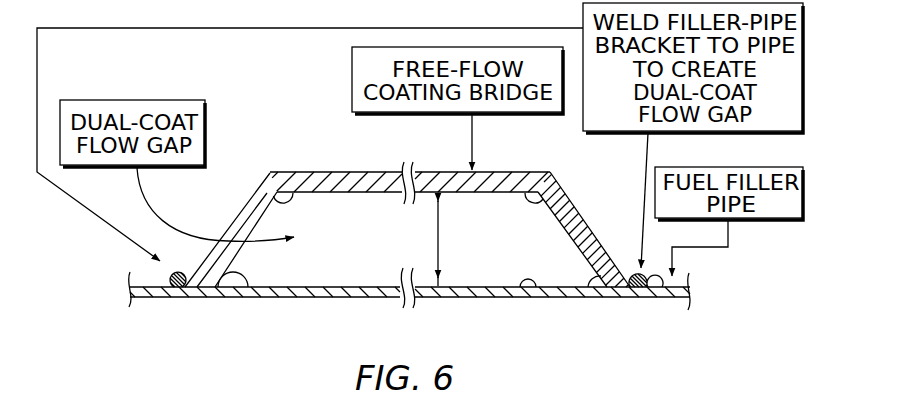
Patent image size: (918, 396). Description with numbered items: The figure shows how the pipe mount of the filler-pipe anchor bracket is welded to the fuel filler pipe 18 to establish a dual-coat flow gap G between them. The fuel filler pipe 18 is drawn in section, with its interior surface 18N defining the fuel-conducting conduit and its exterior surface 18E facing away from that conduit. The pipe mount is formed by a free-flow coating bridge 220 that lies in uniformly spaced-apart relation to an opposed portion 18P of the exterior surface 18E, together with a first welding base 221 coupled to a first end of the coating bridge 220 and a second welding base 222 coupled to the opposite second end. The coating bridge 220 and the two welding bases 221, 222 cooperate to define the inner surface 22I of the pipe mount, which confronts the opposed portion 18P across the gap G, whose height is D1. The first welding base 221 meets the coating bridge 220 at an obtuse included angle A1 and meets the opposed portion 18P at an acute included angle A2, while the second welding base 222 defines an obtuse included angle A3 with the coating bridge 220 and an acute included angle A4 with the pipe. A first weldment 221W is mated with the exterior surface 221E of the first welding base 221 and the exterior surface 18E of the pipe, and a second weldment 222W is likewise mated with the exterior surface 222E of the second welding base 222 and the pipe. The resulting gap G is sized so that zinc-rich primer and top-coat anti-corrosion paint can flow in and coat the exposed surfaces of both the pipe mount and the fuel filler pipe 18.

The fuel filler pipe 18 is at (227, 301).
The exterior surface 18E is at (133, 283).
The interior surface 18N is at (462, 298).
The opposed portion 18P is at (353, 286).
The coating bridge 220 is at (352, 78).
The first welding base 221 is at (245, 207).
The exterior surface 221E is at (198, 266).
The first weldment 221W is at (172, 276).
The second welding base 222 is at (558, 197).
The exterior surface 222E is at (596, 248).
The second weldment 222W is at (668, 297).
The inner surface 22I is at (248, 255).
The obtuse included angle A1 is at (288, 206).
The acute included angle A2 is at (241, 275).
The obtuse included angle A3 is at (527, 203).
The acute included angle A4 is at (596, 275).
The height D1 is at (422, 239).
The dual-coat flow gap G is at (102, 100).